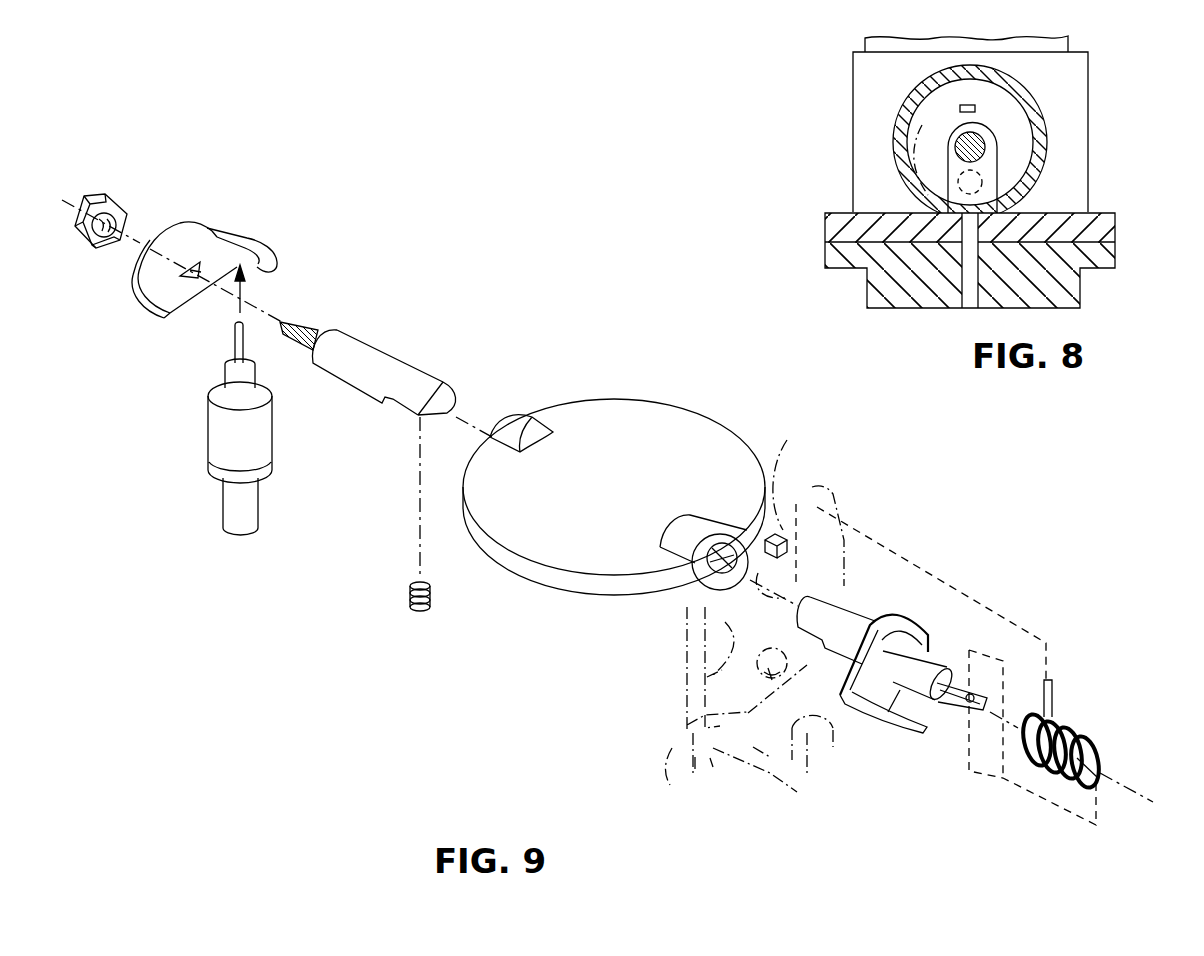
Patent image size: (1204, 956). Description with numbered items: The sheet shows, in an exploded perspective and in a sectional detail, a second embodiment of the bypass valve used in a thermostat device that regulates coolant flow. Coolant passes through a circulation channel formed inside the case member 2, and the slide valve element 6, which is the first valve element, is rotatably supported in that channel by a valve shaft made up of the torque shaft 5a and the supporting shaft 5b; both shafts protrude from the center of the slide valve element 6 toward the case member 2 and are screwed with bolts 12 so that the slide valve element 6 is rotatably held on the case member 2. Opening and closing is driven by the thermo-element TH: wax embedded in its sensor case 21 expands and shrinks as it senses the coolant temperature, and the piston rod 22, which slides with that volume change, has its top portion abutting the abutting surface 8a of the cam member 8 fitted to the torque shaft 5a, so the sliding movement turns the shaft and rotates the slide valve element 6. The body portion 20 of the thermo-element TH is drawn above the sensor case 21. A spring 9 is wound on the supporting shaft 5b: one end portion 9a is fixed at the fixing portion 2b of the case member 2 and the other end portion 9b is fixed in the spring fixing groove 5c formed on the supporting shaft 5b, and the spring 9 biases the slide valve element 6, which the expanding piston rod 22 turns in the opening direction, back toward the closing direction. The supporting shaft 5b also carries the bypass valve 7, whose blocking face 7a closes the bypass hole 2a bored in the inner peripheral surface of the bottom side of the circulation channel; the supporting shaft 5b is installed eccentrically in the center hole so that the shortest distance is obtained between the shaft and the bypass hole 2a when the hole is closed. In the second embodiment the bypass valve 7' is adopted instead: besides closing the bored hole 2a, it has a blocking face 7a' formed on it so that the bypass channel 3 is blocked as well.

In FIG. 8, the case member 2 is at (1080, 82).
In FIG. 9, the case member 2 is at (678, 672).
In FIG. 8, the bypass hole 2a is at (985, 180).
In FIG. 9, the bypass hole 2a is at (670, 817).
In FIG. 8, the fixing portion 2b is at (957, 109).
In FIG. 9, the fixing portion 2b is at (793, 477).
In FIG. 8, the bypass channel 3 is at (965, 288).
In FIG. 9, the bypass channel 3 is at (797, 795).
In FIG. 9, the torque shaft 5a is at (367, 357).
In FIG. 8, the supporting shaft 5b is at (985, 140).
In FIG. 9, the supporting shaft 5b is at (843, 620).
In FIG. 9, the spring fixing groove 5c is at (949, 711).
In FIG. 9, the slide valve element 6 is at (620, 457).
In FIG. 8, the bypass valve 7 is at (1057, 168).
In FIG. 9, the bypass valve 7' is at (910, 606).
In FIG. 8, the blocking face 7a is at (829, 179).
In FIG. 9, the blocking face 7a' is at (883, 774).
In FIG. 9, the cam member 8 is at (172, 226).
In FIG. 9, the abutting surface 8a is at (278, 287).
In FIG. 9, the spring 9 is at (1072, 723).
In FIG. 9, the spring leg 9a is at (1053, 680).
In FIG. 9, the spring end 9b is at (1107, 778).
In FIG. 9, the bolts 12 is at (102, 196).
In FIG. 9, the thermostat body 20 is at (227, 443).
In FIG. 9, the sensor case 21 is at (238, 518).
In FIG. 9, the piston rod 22 is at (232, 320).
In FIG. 9, the thermo-element TH is at (209, 481).